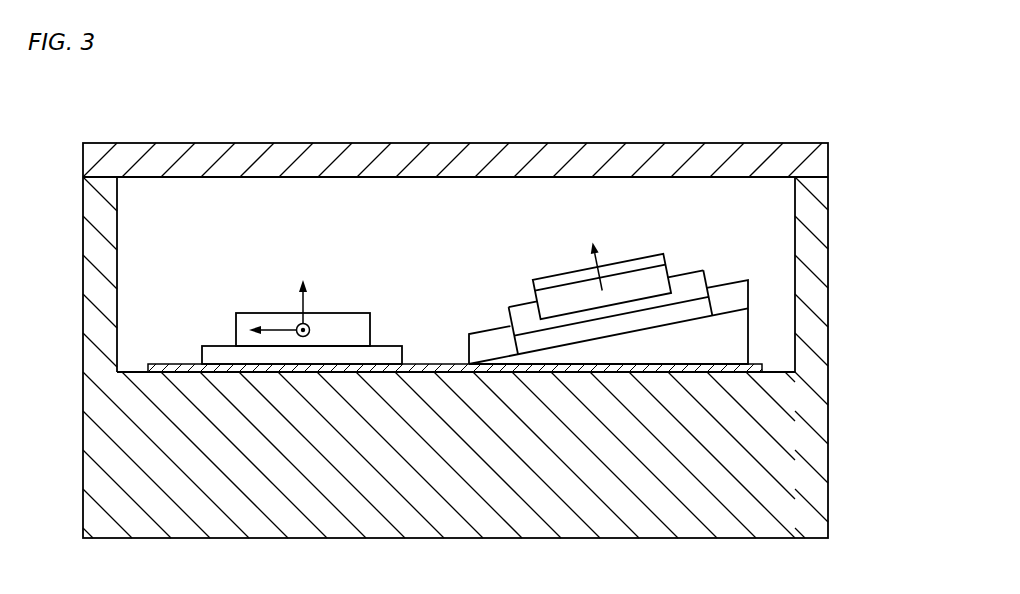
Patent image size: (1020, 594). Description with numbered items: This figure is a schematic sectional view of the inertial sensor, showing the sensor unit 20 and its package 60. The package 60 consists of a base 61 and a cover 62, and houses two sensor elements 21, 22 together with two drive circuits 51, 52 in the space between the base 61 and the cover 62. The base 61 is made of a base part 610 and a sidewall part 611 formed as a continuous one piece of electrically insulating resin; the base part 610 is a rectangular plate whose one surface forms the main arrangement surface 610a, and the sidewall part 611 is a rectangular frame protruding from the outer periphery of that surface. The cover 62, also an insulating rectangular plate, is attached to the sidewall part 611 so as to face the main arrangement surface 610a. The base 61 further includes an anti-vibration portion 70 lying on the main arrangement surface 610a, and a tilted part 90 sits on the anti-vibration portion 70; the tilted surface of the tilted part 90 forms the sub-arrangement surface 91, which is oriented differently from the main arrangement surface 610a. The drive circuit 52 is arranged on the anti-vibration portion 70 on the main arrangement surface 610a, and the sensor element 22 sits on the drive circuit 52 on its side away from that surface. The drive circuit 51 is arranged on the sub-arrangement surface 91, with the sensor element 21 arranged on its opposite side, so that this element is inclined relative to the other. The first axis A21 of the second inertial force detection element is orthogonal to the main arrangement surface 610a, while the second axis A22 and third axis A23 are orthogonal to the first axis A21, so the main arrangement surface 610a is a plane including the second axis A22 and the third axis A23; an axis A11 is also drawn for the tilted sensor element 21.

The sensor unit 20 is at (205, 131).
The package 60 is at (876, 157).
The base 61 is at (817, 303).
The cover 62 is at (820, 162).
The sidewall part 611 is at (95, 245).
The base part 610 is at (100, 478).
The main arrangement surface 610a is at (139, 368).
The anti-vibration portion 70 is at (757, 362).
The drive circuit 52 is at (402, 357).
The sensor element 22 is at (362, 332).
The first axis A21 is at (309, 299).
The second axis A22 is at (304, 337).
The third axis A23 is at (276, 328).
The tilted part 90 is at (732, 292).
The sub-arrangement surface 91 is at (483, 336).
The drive circuit 51 is at (518, 305).
The sensor element 21 is at (553, 276).
The optical axis A11 is at (598, 257).